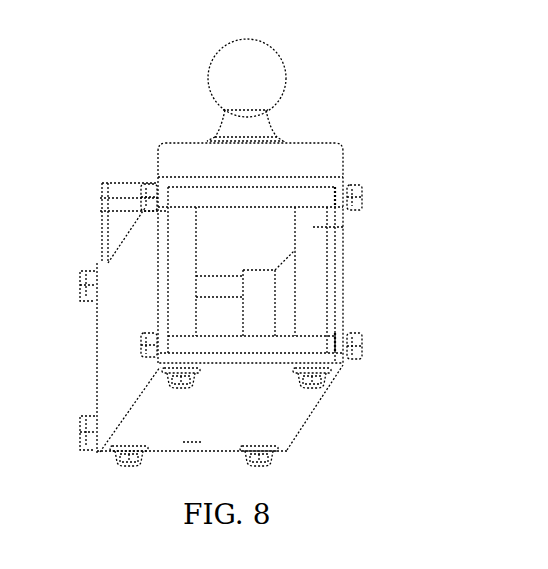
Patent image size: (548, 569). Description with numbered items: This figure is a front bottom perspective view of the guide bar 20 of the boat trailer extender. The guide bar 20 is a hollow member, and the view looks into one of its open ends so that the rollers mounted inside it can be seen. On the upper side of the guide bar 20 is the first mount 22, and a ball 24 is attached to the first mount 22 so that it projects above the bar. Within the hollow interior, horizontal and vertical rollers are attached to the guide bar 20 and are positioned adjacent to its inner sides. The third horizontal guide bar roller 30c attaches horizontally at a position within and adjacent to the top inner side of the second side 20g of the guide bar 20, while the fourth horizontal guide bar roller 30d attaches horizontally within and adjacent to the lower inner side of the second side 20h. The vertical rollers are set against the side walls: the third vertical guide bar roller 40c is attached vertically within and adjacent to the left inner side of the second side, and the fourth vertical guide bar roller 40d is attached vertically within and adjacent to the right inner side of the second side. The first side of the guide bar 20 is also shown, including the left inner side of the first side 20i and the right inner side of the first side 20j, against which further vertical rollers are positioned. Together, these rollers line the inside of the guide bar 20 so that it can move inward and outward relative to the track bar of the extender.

The guide bar 20 is at (130, 131).
The first mount 22 is at (312, 160).
The ball 24 is at (263, 82).
The second side of the guide bar (top inner side) 20g is at (100, 210).
The second side of the guide bar (lower inner side) 20h is at (322, 379).
The first side of the guide bar (left inner side) 20i is at (333, 250).
The first side of the guide bar (right inner side) 20j is at (158, 312).
The third horizontal guide bar roller 30c is at (305, 198).
The fourth horizontal guide bar roller 30d is at (313, 343).
The third vertical guide bar roller 40c is at (313, 227).
The fourth vertical guide bar roller 40d is at (182, 253).